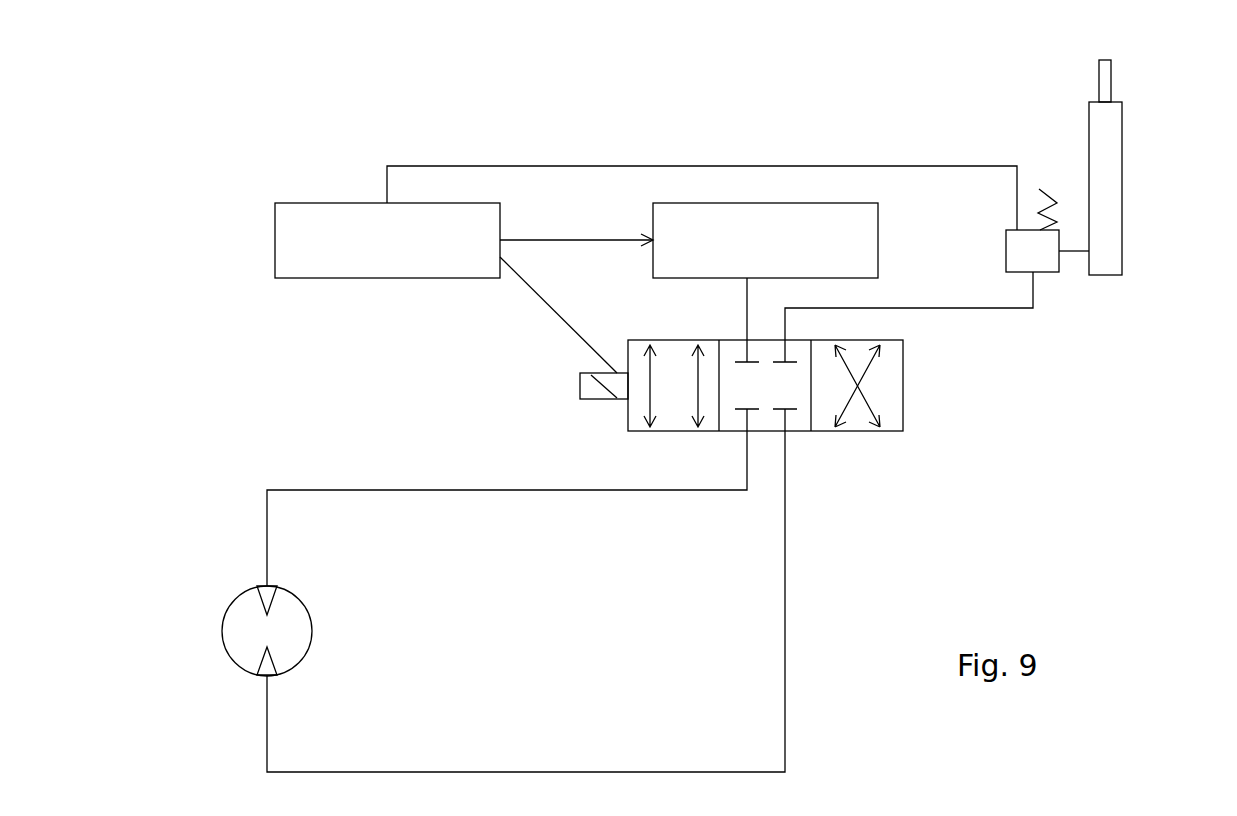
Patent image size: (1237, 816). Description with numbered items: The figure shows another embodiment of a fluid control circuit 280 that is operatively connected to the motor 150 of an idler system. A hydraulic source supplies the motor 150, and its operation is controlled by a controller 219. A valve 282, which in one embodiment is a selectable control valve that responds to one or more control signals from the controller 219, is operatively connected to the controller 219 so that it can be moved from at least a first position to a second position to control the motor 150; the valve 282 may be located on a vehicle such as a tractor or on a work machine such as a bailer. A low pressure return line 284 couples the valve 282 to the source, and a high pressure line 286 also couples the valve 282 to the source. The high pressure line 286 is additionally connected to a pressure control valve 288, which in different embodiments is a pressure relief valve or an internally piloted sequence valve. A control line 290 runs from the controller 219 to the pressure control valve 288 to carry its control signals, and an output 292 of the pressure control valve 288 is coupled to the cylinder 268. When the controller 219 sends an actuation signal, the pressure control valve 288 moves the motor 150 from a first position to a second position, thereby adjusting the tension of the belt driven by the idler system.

The fluid control circuit 280 is at (592, 96).
The controller 219 is at (275, 241).
The control line 290 is at (886, 165).
The pressure control valve 288 is at (1012, 251).
The cylinder 268 is at (1113, 176).
The output 292 is at (1073, 255).
The high pressure line 286 is at (977, 313).
The low pressure return line 284 is at (747, 311).
The valve 282 is at (905, 385).
The motor 150 is at (222, 613).